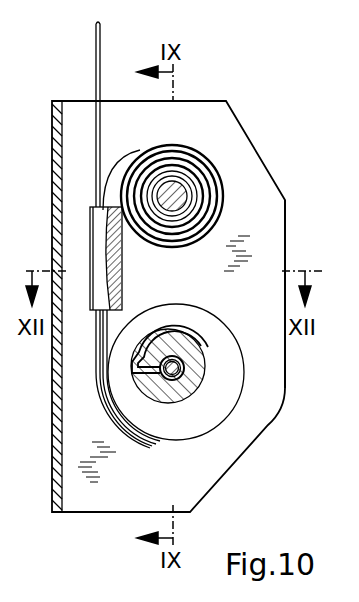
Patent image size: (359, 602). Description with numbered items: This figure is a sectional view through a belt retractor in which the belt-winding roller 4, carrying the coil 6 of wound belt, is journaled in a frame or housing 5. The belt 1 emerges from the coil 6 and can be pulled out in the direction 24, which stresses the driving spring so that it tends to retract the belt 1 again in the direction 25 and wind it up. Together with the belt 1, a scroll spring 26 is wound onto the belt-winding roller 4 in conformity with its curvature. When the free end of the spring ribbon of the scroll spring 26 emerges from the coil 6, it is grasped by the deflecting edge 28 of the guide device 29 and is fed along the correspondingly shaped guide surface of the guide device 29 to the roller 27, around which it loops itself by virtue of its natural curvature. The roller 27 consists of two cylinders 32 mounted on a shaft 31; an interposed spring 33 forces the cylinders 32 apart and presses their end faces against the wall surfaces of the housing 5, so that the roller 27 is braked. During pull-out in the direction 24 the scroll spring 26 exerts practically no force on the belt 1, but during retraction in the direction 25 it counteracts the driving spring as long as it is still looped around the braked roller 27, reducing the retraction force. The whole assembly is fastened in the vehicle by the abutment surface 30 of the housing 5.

The belt 1 is at (97, 133).
The belt-winding roller 4 is at (194, 357).
The housing 5 is at (272, 247).
The coil 6 is at (215, 401).
The pull-out direction 24 is at (83, 38).
The retraction direction 25 is at (111, 67).
The scroll spring 26 is at (125, 186).
The roller 27 is at (188, 147).
The deflecting edge 28 is at (122, 285).
The guide device 29 is at (114, 236).
The abutment surface 30 is at (52, 405).
The shaft 31 is at (178, 197).
The cylinders 32 is at (189, 178).
The spring 33 is at (186, 191).